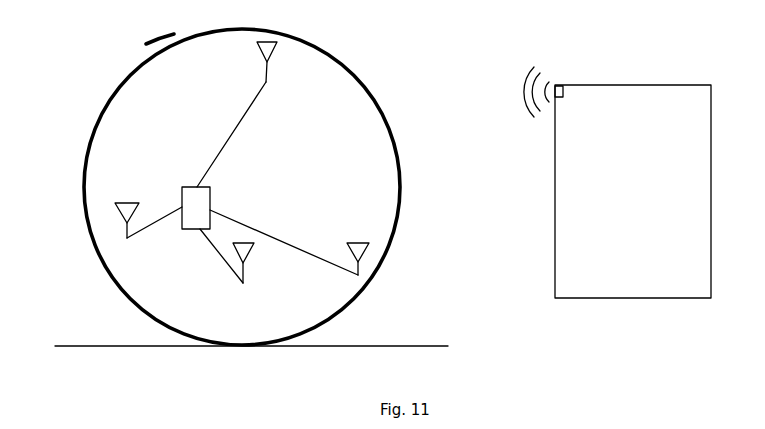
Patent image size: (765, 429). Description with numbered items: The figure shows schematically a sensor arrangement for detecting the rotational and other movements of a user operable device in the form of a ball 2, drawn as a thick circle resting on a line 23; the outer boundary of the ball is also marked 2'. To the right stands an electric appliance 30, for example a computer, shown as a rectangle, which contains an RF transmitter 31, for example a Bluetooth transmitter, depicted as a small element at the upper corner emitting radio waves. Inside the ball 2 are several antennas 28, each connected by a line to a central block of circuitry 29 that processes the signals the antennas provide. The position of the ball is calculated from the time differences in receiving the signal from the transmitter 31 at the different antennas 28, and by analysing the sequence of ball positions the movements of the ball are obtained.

The ball 2 is at (234, 187).
The tire of wheel 2' is at (143, 39).
The ground surface 23 is at (373, 346).
The antennas 28 is at (275, 50).
The circuitry 29 is at (182, 202).
The electric appliance 30 is at (640, 214).
The RF transmitter 31 is at (559, 85).